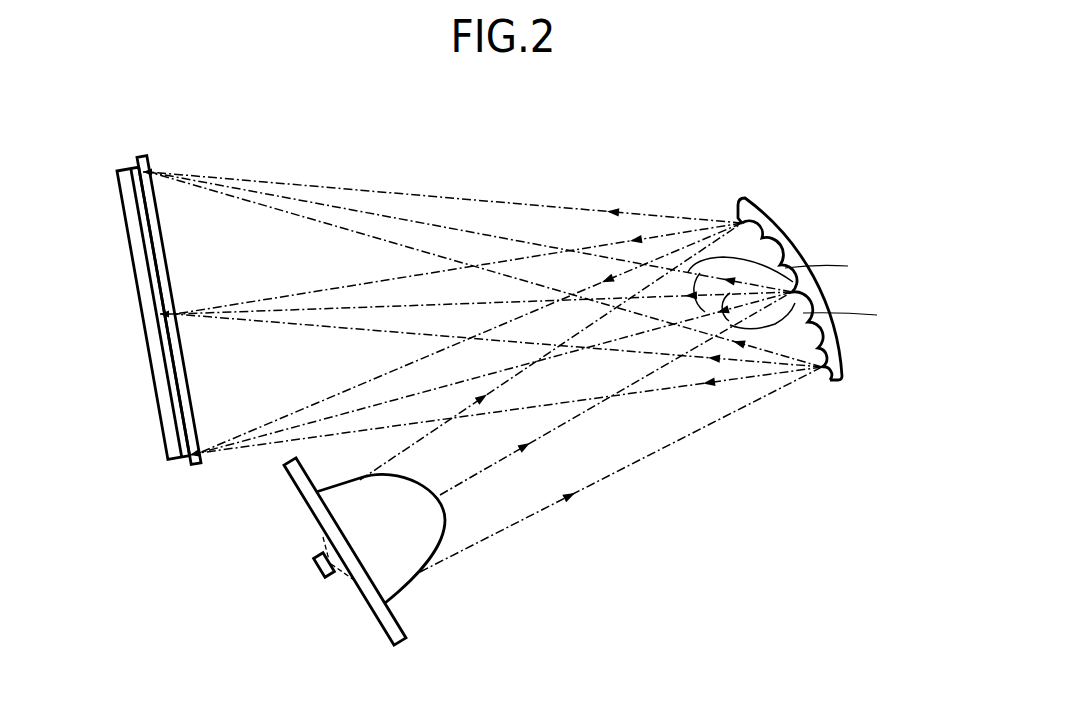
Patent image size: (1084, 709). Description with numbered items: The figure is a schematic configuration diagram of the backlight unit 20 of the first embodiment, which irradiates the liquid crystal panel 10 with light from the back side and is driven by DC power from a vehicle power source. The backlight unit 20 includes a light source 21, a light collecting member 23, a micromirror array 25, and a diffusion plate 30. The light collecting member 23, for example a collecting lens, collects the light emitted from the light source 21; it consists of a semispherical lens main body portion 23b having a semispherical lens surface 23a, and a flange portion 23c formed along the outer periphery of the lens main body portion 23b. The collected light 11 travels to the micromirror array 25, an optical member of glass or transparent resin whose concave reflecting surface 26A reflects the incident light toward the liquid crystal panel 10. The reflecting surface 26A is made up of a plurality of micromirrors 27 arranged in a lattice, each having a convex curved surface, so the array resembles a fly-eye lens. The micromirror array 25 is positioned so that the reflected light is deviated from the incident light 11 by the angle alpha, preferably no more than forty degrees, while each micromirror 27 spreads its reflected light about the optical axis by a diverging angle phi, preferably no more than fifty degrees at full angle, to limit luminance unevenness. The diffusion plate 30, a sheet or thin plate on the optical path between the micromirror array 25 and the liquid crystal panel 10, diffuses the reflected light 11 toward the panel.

The liquid crystal panel 10 is at (122, 168).
The diffusion plate 30 is at (141, 153).
The backlight unit 20 is at (562, 147).
The micromirror array 25 is at (856, 354).
The reflecting surface 26A is at (811, 392).
The micromirror 27 is at (823, 378).
The light 11 is at (615, 473).
The light source 21 is at (311, 570).
The light collecting member 23 is at (423, 567).
The semispherical lens surface 23a is at (447, 522).
The lens main body portion 23b is at (403, 543).
The flange portion 23c is at (403, 630).